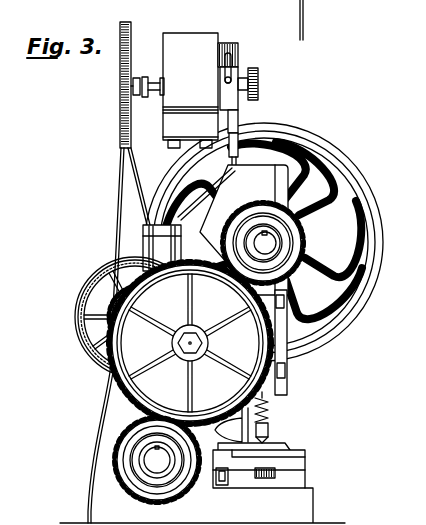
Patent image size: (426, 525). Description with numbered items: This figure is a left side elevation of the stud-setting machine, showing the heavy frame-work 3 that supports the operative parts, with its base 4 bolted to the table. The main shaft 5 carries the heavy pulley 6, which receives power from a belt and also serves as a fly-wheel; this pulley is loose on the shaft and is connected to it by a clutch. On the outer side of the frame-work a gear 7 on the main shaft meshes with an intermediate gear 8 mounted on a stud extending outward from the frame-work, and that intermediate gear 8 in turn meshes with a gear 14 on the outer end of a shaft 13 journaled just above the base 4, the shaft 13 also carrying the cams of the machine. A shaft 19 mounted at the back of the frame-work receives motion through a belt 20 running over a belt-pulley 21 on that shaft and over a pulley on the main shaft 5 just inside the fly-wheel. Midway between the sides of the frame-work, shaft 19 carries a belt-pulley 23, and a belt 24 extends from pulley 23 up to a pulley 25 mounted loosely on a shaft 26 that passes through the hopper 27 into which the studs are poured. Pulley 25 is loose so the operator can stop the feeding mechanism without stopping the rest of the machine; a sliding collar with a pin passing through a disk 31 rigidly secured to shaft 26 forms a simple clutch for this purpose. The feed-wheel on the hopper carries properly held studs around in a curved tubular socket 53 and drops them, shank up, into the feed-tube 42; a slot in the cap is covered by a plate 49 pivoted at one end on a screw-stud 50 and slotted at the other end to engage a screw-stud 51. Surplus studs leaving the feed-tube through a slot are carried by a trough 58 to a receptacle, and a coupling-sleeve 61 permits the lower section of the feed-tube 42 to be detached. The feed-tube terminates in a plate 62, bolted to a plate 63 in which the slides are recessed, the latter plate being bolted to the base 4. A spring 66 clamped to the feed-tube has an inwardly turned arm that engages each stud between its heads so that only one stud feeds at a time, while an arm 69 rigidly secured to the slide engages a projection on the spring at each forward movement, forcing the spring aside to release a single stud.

The frame-work 3 is at (244, 280).
The base 4 is at (202, 505).
The main shaft 5 is at (270, 243).
The pulley 6 is at (381, 281).
The gear 7 is at (303, 254).
The intermediate gear 8 is at (270, 343).
The shaft 13 is at (157, 460).
The gear 14 is at (182, 488).
The shaft 19 is at (176, 343).
The belt 20 is at (195, 220).
The belt-pulley 21 is at (77, 303).
The belt-pulley 23 is at (112, 322).
The belt 24 is at (119, 216).
The pulley 25 is at (121, 81).
The shaft 26 is at (154, 97).
The hopper 27 is at (190, 90).
The disk 31 is at (138, 79).
The feed-tube 42 is at (231, 425).
The plate 49 is at (241, 61).
The screw-stud 50 is at (226, 82).
The screw-stud 51 is at (232, 43).
The tubular socket 53 is at (162, 253).
The trough 58 is at (185, 200).
The coupling-sleeve 61 is at (240, 140).
The plate 62 is at (262, 447).
The plate 63 is at (300, 467).
The spring 66 is at (271, 410).
The arm 69 is at (197, 432).